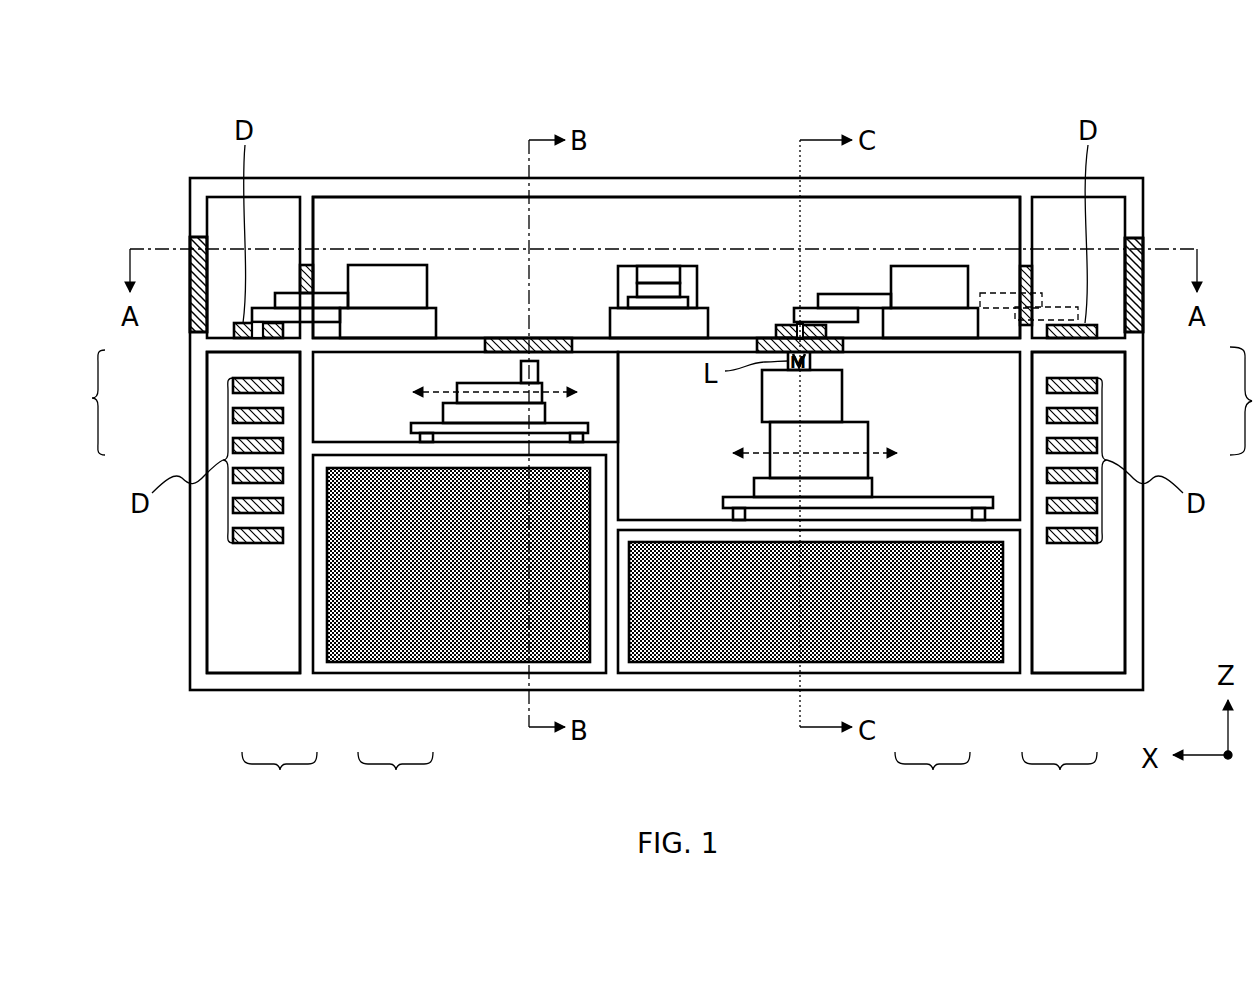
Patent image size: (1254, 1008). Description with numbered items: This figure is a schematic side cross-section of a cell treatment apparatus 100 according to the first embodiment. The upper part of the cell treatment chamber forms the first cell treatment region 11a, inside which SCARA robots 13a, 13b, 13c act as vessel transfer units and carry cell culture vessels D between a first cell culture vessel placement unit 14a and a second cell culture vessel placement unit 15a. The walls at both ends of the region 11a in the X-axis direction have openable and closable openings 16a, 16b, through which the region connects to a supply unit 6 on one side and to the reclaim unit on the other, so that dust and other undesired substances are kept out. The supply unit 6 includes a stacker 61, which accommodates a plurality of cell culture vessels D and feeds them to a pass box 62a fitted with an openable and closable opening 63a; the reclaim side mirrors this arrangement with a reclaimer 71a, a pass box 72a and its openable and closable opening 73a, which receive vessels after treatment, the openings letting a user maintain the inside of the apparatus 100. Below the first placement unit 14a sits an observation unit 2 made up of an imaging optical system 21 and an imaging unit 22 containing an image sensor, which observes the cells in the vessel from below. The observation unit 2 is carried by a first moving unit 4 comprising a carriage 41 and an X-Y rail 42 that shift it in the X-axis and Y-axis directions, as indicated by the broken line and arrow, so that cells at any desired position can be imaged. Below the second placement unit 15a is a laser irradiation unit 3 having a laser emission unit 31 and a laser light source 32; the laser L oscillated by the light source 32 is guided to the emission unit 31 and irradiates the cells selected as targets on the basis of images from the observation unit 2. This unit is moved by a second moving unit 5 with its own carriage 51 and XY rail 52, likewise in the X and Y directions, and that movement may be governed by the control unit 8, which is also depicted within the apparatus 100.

The cell treatment apparatus 100 is at (185, 131).
The control unit 8 is at (583, 640).
The SCARA robot 13a is at (388, 290).
The SCARA robot 13b is at (660, 266).
The SCARA robot 13c is at (930, 290).
The first cell culture vessel placement unit 14a is at (558, 336).
The second cell culture vessel placement unit 15a is at (765, 336).
The openable and closable opening 16a is at (302, 270).
The openable and closable opening 16b is at (1028, 300).
The first cell treatment region 11a is at (992, 218).
The stacker 61 is at (217, 417).
The pass box 62a is at (228, 327).
The openable and closable opening 63a is at (197, 304).
The supply unit 6 is at (85, 402).
The right housing 71a is at (1115, 415).
The pass box 72a is at (1105, 323).
The openable and closable opening 73a is at (1140, 313).
The observation unit 2 is at (467, 598).
The imaging optical system 21 is at (497, 397).
The imaging unit 22 is at (528, 372).
The first moving unit 4 is at (279, 778).
The carriage 41 is at (459, 417).
The X-Y rail 42 is at (419, 430).
The laser irradiation unit 3 is at (851, 628).
The laser emission unit 31 is at (813, 408).
The laser light source 32 is at (845, 463).
The second moving unit 5 is at (1059, 778).
The carriage 51 is at (868, 487).
The XY rail 52 is at (917, 503).